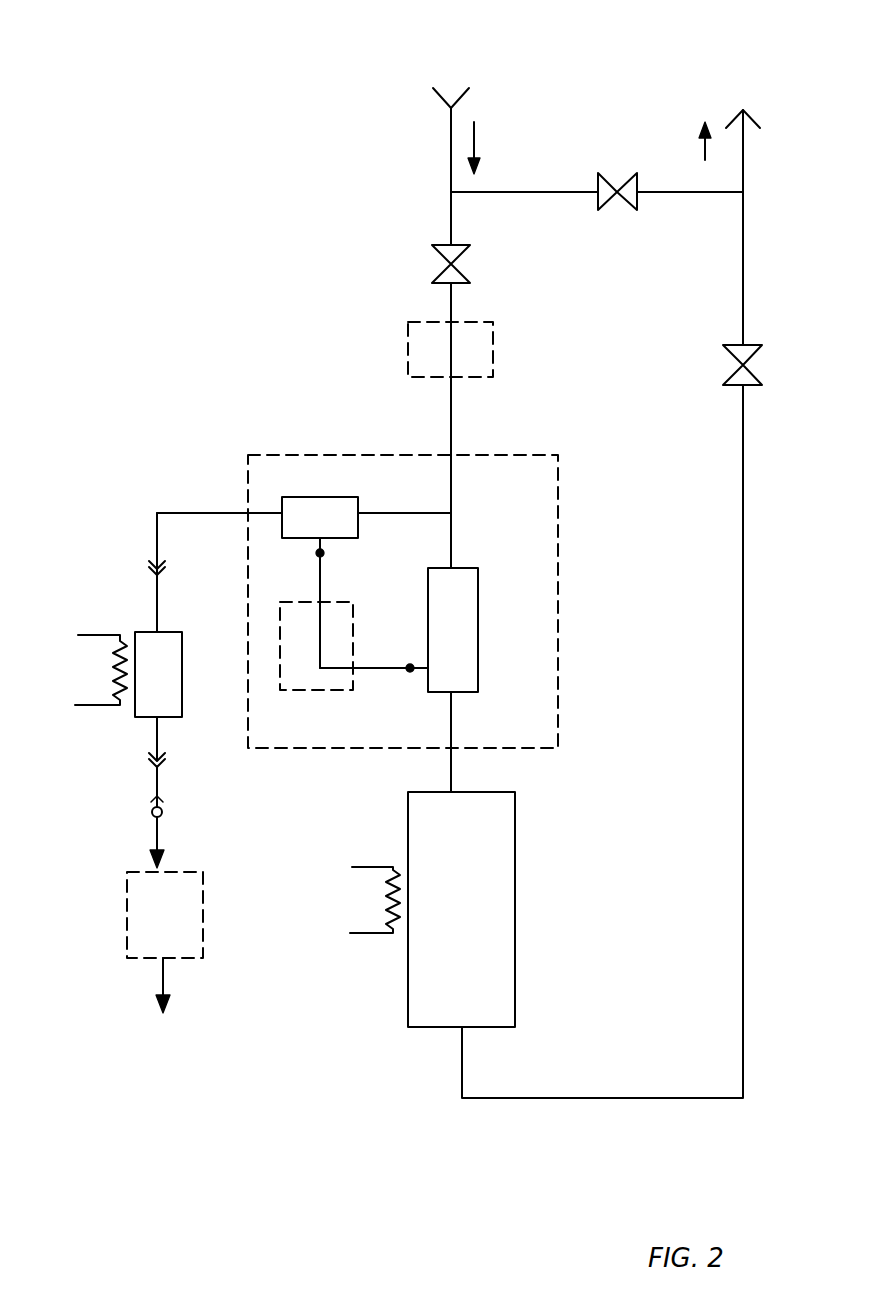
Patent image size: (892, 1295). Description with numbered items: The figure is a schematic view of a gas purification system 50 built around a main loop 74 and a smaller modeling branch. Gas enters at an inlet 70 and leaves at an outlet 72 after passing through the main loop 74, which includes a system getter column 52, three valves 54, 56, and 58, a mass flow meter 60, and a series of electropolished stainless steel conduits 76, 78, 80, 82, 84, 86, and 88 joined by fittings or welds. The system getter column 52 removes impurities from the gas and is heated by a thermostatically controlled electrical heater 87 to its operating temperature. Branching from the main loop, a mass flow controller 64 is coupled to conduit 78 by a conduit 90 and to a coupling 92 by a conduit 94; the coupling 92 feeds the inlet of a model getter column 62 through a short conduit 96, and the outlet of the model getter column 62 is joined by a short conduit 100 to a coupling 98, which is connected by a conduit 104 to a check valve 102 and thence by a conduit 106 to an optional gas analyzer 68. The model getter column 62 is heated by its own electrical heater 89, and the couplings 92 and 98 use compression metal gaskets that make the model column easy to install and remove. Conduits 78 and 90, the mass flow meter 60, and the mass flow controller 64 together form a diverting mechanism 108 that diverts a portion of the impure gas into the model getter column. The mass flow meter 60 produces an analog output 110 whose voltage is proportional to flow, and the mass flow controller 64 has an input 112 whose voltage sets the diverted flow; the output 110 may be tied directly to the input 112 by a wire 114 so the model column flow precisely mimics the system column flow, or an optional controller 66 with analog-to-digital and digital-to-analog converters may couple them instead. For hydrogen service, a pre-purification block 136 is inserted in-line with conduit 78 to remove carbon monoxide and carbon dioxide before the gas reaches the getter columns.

The gas purification system 50 is at (290, 84).
The system getter column 52 is at (487, 958).
The valve 54 is at (453, 262).
The valve 56 is at (746, 355).
The valve 58 is at (614, 212).
The mass flow meter 60 is at (479, 632).
The model getter column 62 is at (160, 652).
The mass flow controller 64 is at (309, 503).
The controller 66 is at (330, 690).
The gas analyzer 68 is at (204, 890).
The gas inlet 70 is at (452, 88).
The gas outlet 72 is at (754, 112).
The main loop 74 is at (680, 552).
The conduit 76 is at (450, 212).
The conduit 78 is at (455, 533).
The conduit 80 is at (455, 709).
The conduit 82 is at (746, 740).
The conduit 84 is at (744, 247).
The conduit 86 is at (520, 192).
The electrical heater 87 is at (370, 899).
The conduit 88 is at (677, 192).
The electrical heater 89 is at (107, 680).
The conduit 90 is at (391, 513).
The coupling 92 is at (163, 571).
The conduit 94 is at (184, 513).
The short conduit 96 is at (159, 607).
The coupling 98 is at (163, 758).
The short conduit 100 is at (157, 731).
The check valve 102 is at (165, 806).
The conduit 104 is at (157, 777).
The conduit 106 is at (157, 832).
The diverting mechanism 108 is at (558, 535).
The analog output 110 is at (410, 672).
The input 112 is at (324, 553).
The wire 114 is at (372, 668).
The pre-purification block 136 is at (493, 353).